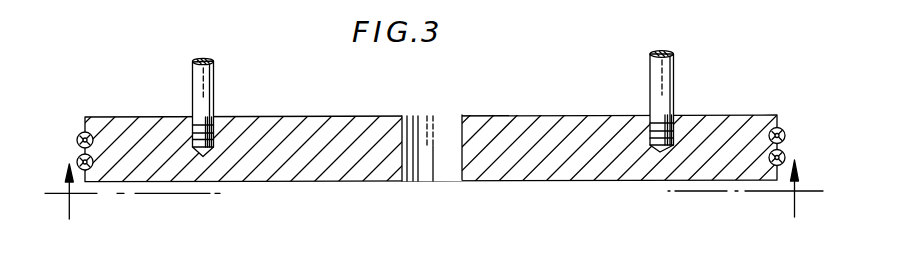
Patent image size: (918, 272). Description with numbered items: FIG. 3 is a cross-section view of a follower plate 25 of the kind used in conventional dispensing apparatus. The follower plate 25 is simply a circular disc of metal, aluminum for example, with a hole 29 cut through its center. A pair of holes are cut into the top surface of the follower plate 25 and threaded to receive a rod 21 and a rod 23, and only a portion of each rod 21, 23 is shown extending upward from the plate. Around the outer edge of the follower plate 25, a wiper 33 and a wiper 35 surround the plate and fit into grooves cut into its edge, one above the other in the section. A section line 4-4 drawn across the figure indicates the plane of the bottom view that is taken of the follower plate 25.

The rod 21 is at (214, 94).
The rod 23 is at (674, 95).
The follower plate 25 is at (172, 116).
The hole 29 is at (442, 167).
The wiper 33 is at (78, 138).
The wiper 35 is at (787, 150).
The section line 4- 4 is at (432, 189).